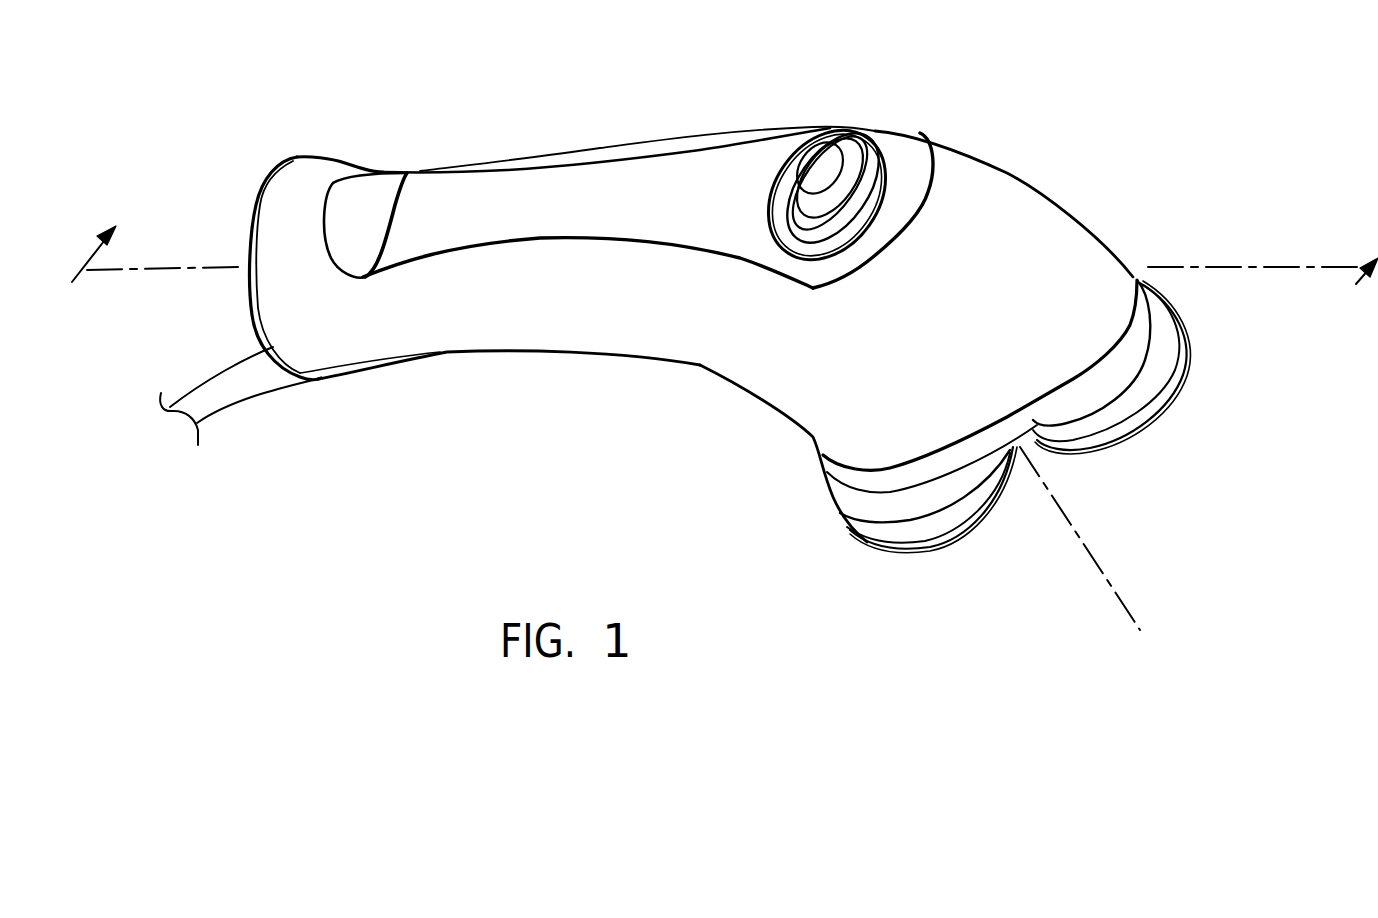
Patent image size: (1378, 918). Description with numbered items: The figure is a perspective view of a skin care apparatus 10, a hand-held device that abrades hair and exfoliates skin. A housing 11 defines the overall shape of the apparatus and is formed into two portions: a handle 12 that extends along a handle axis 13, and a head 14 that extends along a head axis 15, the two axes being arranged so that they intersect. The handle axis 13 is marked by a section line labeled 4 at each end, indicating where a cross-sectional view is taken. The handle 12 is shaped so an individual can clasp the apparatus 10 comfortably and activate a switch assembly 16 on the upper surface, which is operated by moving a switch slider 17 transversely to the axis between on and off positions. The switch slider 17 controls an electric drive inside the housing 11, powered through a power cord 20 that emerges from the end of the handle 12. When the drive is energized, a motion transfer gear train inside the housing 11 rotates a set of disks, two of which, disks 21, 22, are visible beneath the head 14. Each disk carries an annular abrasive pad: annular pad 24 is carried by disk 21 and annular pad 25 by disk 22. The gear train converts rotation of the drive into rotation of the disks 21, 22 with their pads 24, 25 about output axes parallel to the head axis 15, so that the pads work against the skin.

The section line 4- 4 is at (715, 266).
The skin care apparatus 10 is at (1068, 93).
The housing 11 is at (847, 127).
The handle 12 is at (622, 143).
The handle axis 13 is at (1227, 267).
The head 14 is at (820, 377).
The head axis 15 is at (1120, 602).
The switch assembly 16 is at (870, 162).
The switch slider 17 is at (822, 160).
The power cord 20 is at (228, 383).
The disk 21 is at (1178, 338).
The disk 22 is at (865, 523).
The annular pad 24 is at (1148, 427).
The annular pad 25 is at (962, 520).